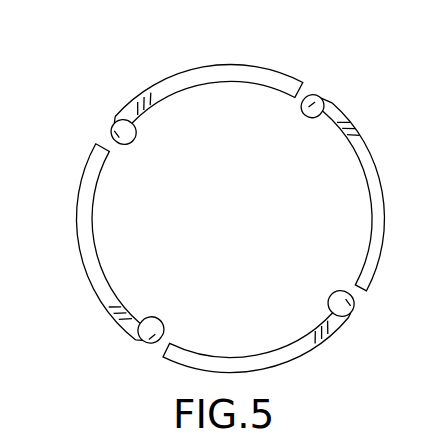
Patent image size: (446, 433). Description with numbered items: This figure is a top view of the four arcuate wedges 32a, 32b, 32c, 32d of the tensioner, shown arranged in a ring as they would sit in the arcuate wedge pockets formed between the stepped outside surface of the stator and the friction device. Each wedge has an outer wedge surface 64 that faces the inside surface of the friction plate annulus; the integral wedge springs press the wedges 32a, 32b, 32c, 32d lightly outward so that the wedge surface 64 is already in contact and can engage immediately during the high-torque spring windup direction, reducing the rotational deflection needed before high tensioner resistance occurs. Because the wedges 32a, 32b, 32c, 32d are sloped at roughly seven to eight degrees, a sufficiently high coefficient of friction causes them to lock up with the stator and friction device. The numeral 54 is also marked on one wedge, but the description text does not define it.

The wedge surface 64 is at (77, 222).
The wedge 32a is at (107, 285).
The wedge 32b is at (200, 78).
The wedge 32c is at (360, 167).
The wedge 32d is at (277, 360).
The inclined surface of ring segment 54 is at (300, 338).